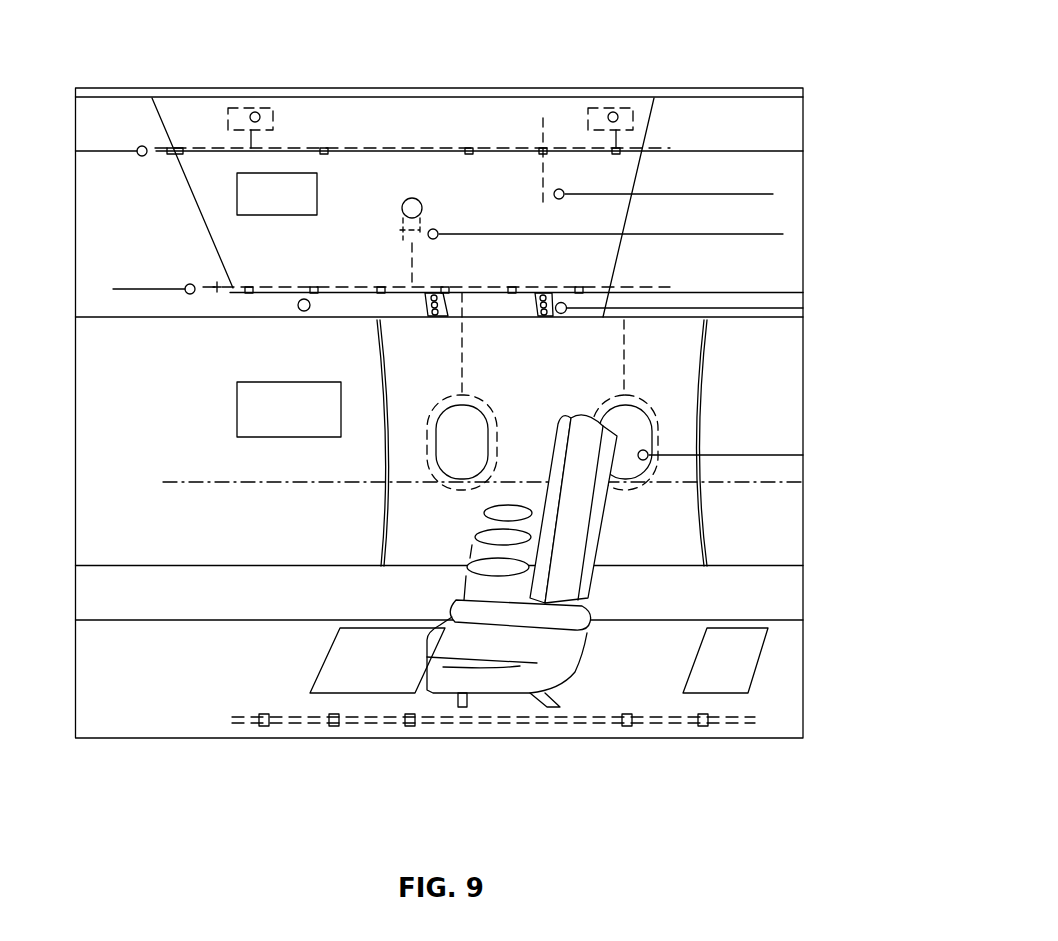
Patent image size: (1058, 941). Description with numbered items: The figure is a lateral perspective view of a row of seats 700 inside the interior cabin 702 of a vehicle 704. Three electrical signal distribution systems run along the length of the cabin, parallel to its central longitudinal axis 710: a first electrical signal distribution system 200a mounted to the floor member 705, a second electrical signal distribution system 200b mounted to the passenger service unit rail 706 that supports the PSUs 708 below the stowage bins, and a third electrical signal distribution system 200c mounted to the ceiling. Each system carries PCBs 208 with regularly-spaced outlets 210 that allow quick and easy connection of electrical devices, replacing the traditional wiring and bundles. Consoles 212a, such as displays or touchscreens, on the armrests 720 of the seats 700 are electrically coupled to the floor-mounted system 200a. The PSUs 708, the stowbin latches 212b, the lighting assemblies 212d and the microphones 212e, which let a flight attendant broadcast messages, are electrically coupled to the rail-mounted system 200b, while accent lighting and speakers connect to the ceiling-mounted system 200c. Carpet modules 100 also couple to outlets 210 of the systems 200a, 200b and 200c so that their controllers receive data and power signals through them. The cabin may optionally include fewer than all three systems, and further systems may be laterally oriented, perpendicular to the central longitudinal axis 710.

The carpet module 100 is at (272, 193).
The first electrical signal distribution system 200a is at (272, 717).
The second electrical signal distribution system 200b is at (217, 290).
The third electrical signal distribution system 200c is at (158, 147).
The PCB 208 is at (205, 147).
The outlet 210 is at (180, 153).
The console 212a is at (455, 603).
The stowbin latch 212b is at (401, 229).
The lighting assembly 212d is at (256, 113).
The microphone 212e is at (306, 312).
The seat 700 is at (525, 562).
The interior cabin 702 is at (177, 441).
The vehicle 704 is at (775, 51).
The floor member 705 is at (152, 684).
The passenger service unit rail 706 is at (672, 292).
The passenger service unit 708 is at (510, 113).
The central longitudinal axis 710 is at (337, 207).
The armrest 720 is at (580, 647).